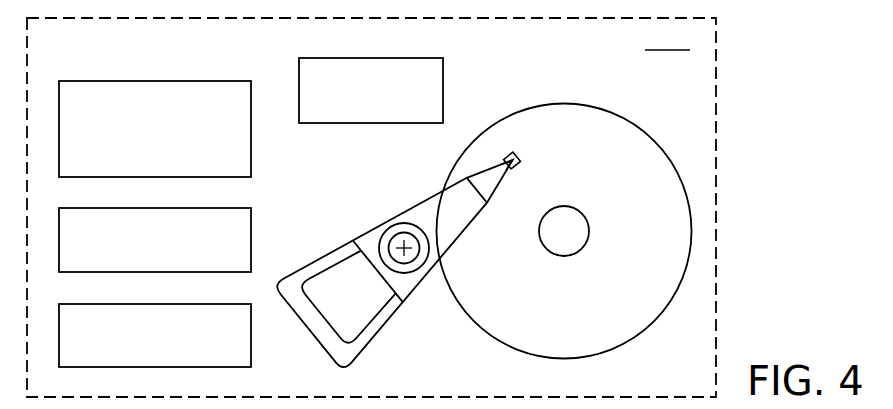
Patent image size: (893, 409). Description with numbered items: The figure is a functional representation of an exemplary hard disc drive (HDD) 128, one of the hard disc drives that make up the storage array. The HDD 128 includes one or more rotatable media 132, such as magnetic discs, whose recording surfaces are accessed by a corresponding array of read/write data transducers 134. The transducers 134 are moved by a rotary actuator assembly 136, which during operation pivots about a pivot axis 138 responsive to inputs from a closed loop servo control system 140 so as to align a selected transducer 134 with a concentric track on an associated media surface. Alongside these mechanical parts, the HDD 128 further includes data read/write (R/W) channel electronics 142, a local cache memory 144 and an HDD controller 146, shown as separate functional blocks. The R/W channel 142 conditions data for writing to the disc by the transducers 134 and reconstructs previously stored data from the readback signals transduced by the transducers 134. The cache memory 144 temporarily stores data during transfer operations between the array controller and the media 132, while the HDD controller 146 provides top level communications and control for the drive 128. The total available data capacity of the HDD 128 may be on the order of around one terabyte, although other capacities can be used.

The hard disc drive (HDD) 128 is at (716, 207).
The rotatable media 132 is at (590, 128).
The read/write data transducers 134 is at (513, 155).
The rotary actuator assembly 136 is at (426, 272).
The pivot axis 138 is at (400, 238).
The closed loop servo control system 140 is at (373, 58).
The data read/write (R/W) channel electronics 142 is at (155, 304).
The local cache memory 144 is at (155, 208).
The HDD controller 146 is at (155, 81).